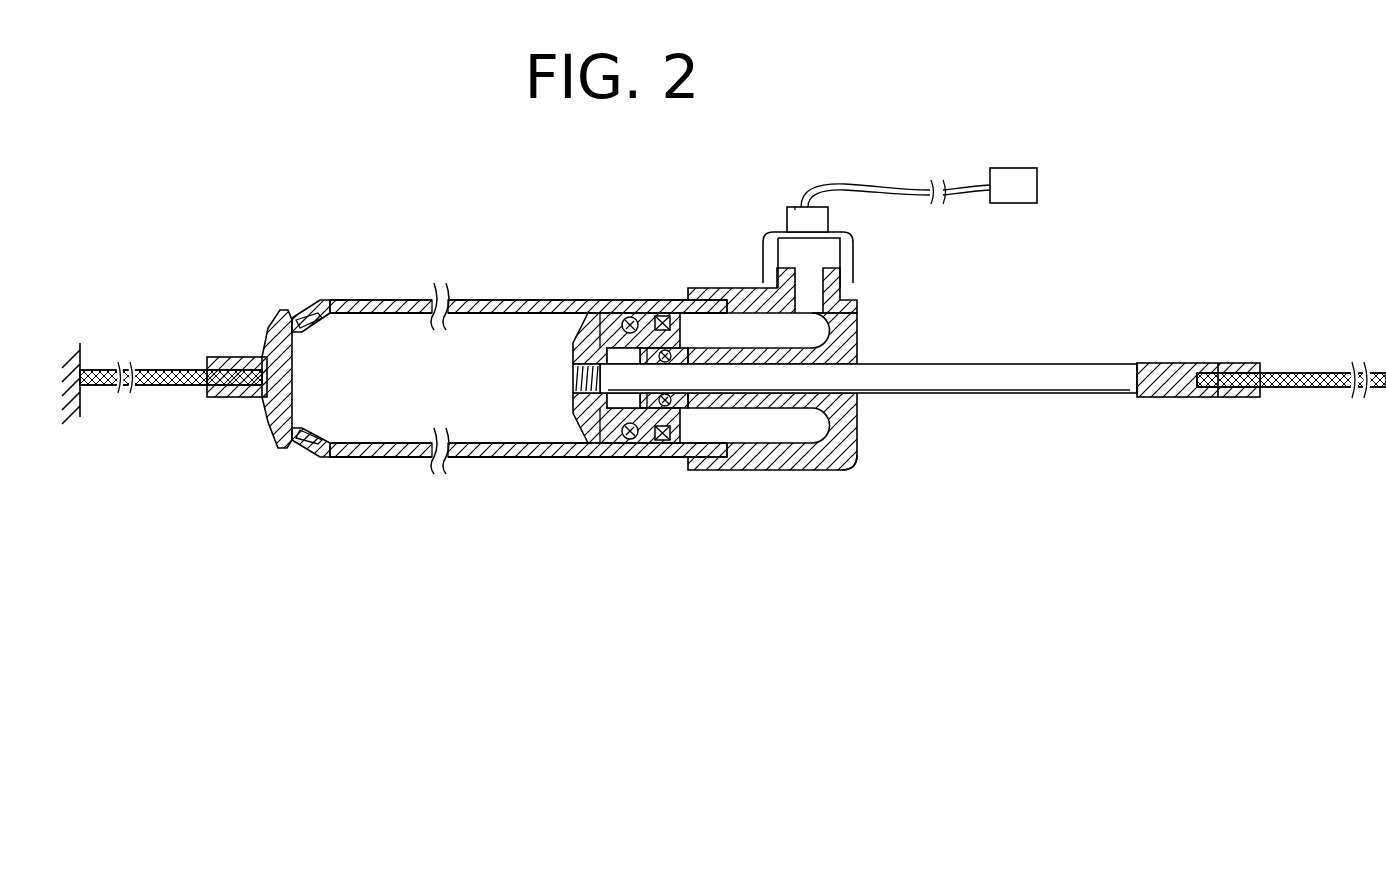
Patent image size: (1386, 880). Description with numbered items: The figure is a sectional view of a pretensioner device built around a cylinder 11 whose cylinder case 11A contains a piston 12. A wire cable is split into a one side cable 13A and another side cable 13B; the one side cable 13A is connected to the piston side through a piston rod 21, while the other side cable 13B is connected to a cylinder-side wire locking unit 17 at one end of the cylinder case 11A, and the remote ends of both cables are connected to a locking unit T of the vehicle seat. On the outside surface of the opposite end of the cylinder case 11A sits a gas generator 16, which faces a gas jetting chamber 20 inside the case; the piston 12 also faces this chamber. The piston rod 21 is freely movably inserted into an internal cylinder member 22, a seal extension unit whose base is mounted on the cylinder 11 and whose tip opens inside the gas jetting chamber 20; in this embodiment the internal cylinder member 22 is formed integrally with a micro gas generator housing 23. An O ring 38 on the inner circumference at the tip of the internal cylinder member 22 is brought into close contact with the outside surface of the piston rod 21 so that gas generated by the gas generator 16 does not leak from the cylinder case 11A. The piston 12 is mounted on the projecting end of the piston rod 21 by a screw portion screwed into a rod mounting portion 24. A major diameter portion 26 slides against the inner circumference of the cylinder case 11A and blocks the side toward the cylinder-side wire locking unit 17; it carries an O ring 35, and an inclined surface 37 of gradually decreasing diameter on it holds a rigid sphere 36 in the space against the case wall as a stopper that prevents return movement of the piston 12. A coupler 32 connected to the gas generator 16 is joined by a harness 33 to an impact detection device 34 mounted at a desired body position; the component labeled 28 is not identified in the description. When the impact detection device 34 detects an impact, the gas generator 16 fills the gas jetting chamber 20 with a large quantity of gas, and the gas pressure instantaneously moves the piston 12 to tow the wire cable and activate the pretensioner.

The locking unit T is at (85, 345).
The cylinder 11 is at (528, 341).
The cylinder case 11A is at (364, 300).
The piston 12 is at (588, 334).
The one side cable 13A is at (1312, 398).
The other side cable 13B is at (172, 398).
The gas generator 16 is at (857, 252).
The cylinder-side wire locking unit 17 is at (270, 310).
The gas jetting chamber 20 is at (752, 333).
The piston rod 21 is at (995, 398).
The internal cylinder member 22 is at (777, 347).
The micro gas generator housing 23 is at (848, 465).
The rod mounting portion 24 is at (575, 378).
The major diameter portion 26 is at (648, 457).
The sensor 28 is at (826, 256).
The coupler 32 is at (797, 214).
The harness 33 is at (900, 186).
The impact detection device 34 is at (1037, 183).
The O ring 35 is at (663, 312).
The rigid sphere 36 is at (629, 312).
The inclined surface 37 is at (616, 312).
The O ring 38 is at (685, 410).